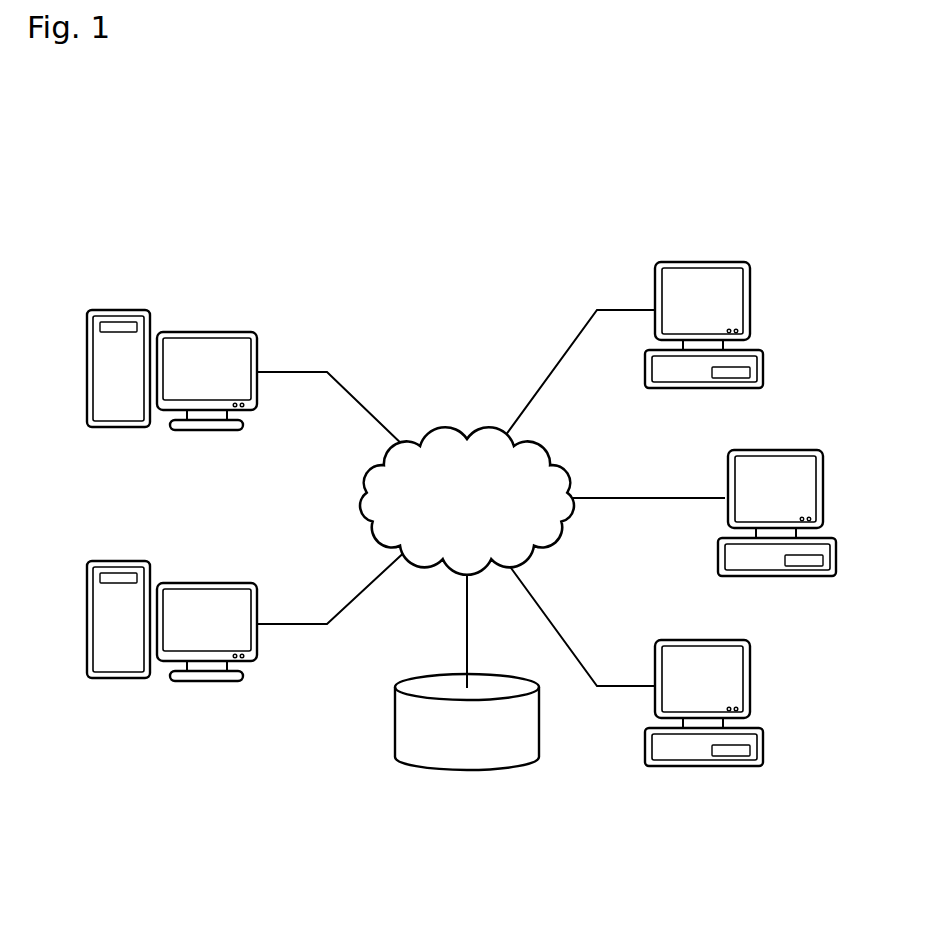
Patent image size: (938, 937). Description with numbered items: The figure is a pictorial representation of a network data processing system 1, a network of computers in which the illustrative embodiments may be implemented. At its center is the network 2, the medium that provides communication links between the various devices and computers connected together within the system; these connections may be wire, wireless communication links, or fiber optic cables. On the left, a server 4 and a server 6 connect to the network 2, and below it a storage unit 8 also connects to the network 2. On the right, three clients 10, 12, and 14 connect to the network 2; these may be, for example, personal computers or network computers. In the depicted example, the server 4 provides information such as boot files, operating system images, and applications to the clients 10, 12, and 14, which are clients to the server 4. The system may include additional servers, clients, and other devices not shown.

The network data processing system 1 is at (327, 268).
The network 2 is at (454, 440).
The server 4 is at (87, 347).
The server 6 is at (87, 623).
The storage unit 8 is at (396, 722).
The client 10 is at (766, 368).
The client 12 is at (838, 558).
The client 14 is at (766, 750).